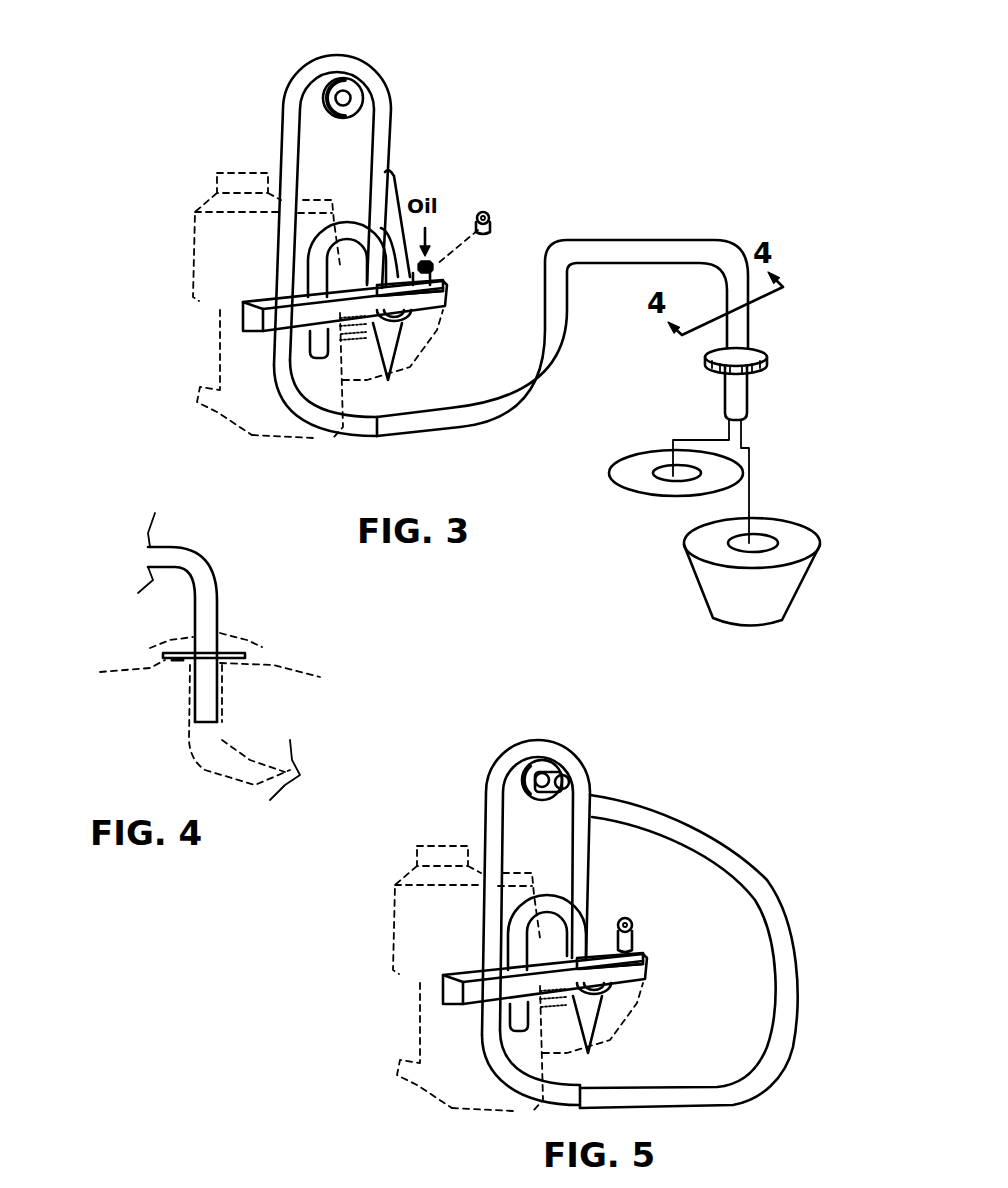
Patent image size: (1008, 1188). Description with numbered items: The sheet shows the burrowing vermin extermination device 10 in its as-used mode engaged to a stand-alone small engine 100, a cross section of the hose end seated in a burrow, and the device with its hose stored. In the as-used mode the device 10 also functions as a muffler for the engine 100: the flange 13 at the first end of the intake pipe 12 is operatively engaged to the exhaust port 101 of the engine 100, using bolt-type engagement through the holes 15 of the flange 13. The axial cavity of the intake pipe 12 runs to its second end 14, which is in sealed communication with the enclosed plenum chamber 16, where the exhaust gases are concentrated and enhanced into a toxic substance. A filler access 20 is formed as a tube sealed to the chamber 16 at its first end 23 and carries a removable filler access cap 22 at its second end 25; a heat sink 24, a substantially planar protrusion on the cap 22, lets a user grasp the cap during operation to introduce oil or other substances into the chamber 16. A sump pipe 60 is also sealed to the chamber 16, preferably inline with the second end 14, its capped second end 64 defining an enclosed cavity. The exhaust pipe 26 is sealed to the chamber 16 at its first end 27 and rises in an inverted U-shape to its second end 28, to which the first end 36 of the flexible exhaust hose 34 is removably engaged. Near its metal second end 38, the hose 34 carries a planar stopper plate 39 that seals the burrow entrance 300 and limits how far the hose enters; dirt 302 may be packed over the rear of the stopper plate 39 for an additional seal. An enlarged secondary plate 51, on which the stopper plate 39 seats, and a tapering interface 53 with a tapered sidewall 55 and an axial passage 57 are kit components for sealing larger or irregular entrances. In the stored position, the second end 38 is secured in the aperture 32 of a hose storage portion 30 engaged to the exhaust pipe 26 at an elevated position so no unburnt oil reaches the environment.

In FIG. 3, the burrowing vermin extermination device 10 is at (452, 103).
In FIG. 5, the burrowing vermin extermination device 10 is at (636, 753).
In FIG. 3, the intake pipe 12 is at (348, 223).
In FIG. 5, the intake pipe 12 is at (587, 910).
In FIG. 3, the flange 13 is at (397, 327).
In FIG. 5, the flange 13 is at (588, 995).
In FIG. 3, the second end 14 is at (308, 295).
In FIG. 5, the second end 14 is at (508, 968).
In FIG. 3, the holes 15 is at (369, 364).
In FIG. 3, the plenum chamber 16 is at (245, 308).
In FIG. 5, the plenum chamber 16 is at (450, 988).
In FIG. 3, the filler access 20 is at (442, 287).
In FIG. 5, the filler access 20 is at (642, 962).
In FIG. 3, the filler access cap 22 is at (490, 228).
In FIG. 5, the filler access cap 22 is at (635, 933).
In FIG. 3, the first end 23 is at (399, 216).
In FIG. 3, the heat sink 24 is at (482, 210).
In FIG. 5, the heat sink 24 is at (630, 920).
In FIG. 3, the second end 25 is at (433, 268).
In FIG. 3, the exhaust pipe 26 is at (285, 128).
In FIG. 5, the exhaust pipe 26 is at (483, 823).
In FIG. 3, the first end 27 is at (423, 297).
In FIG. 5, the first end 27 is at (630, 977).
In FIG. 3, the second end 28 is at (372, 436).
In FIG. 3, the hose storage portion 30 is at (332, 120).
In FIG. 5, the hose storage portion 30 is at (535, 805).
In FIG. 3, the aperture 32 is at (347, 95).
In FIG. 5, the aperture 32 is at (528, 767).
In FIG. 3, the exhaust hose 34 is at (517, 410).
In FIG. 4, the exhaust hose 34 is at (208, 572).
In FIG. 5, the exhaust hose 34 is at (788, 910).
In FIG. 3, the first end 36 is at (380, 437).
In FIG. 3, the second end 38 is at (743, 417).
In FIG. 4, the second end 38 is at (220, 723).
In FIG. 5, the second end 38 is at (557, 770).
In FIG. 3, the stopper plate 39 is at (763, 358).
In FIG. 4, the stopper plate 39 is at (260, 652).
In FIG. 3, the secondary plate 51 is at (642, 460).
In FIG. 3, the tapering interface 53 is at (700, 553).
In FIG. 3, the tapered sidewall 55 is at (722, 590).
In FIG. 3, the axial passage 57 is at (755, 542).
In FIG. 3, the sump pipe 60 is at (307, 335).
In FIG. 5, the sump pipe 60 is at (512, 1013).
In FIG. 3, the second end 64 is at (317, 356).
In FIG. 5, the second end 64 is at (518, 1032).
In FIG. 3, the engine 100 is at (212, 278).
In FIG. 5, the engine 100 is at (390, 928).
In FIG. 3, the exhaust port 101 is at (403, 327).
In FIG. 5, the exhaust port 101 is at (610, 1002).
In FIG. 4, the burrow entrance 300 is at (188, 670).
In FIG. 4, the dirt 302 is at (150, 647).